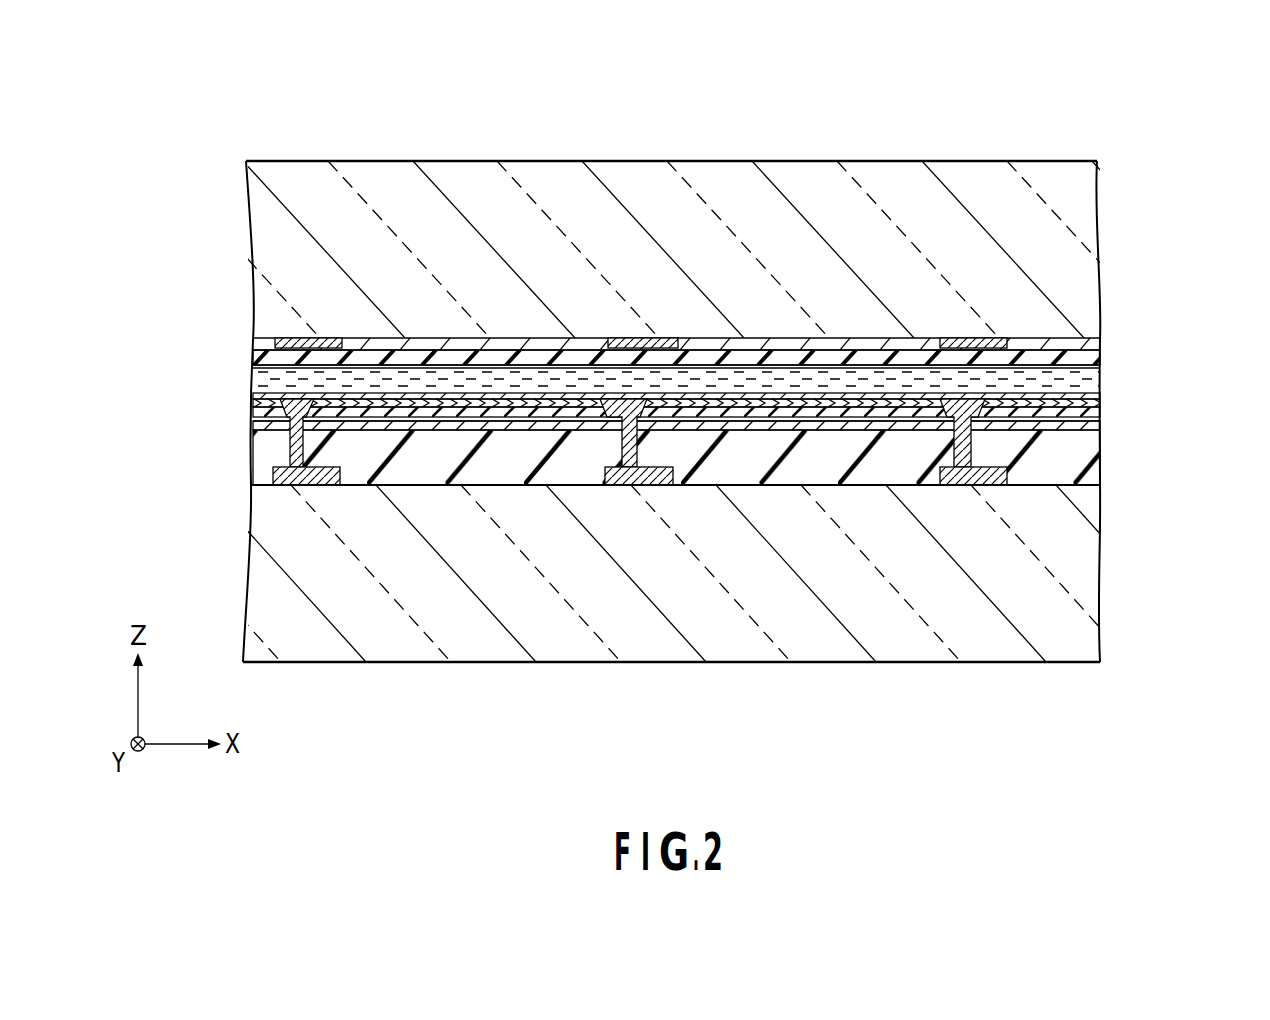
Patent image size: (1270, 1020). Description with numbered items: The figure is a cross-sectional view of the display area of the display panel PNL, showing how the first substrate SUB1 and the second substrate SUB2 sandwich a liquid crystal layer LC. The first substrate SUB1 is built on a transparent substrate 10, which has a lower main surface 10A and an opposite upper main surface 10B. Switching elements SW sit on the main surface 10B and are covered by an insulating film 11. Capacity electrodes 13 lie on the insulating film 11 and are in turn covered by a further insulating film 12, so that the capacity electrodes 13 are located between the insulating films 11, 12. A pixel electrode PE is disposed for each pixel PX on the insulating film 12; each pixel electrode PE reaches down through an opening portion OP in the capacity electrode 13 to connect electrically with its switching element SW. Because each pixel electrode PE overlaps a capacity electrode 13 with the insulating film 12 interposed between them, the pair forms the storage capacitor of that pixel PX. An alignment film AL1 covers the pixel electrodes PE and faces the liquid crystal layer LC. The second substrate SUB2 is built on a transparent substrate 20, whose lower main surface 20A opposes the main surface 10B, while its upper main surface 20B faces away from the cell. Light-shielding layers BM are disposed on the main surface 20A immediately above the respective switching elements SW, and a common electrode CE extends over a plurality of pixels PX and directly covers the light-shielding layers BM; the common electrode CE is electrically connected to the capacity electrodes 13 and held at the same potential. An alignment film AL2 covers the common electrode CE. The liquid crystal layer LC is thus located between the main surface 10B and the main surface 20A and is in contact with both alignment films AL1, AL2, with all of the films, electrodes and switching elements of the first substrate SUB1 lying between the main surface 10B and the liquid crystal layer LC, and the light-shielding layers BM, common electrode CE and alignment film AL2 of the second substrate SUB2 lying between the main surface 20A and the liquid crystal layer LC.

The display panel PNL is at (1083, 161).
The transparent substrate 20 is at (706, 215).
The main surface 20A is at (850, 346).
The main surface 20B is at (892, 161).
The second substrate SUB2 is at (1112, 270).
The light-shielding layer BM is at (308, 338).
The common electrode CE is at (1100, 344).
The alignment film AL2 is at (1100, 362).
The liquid crystal layer LC is at (1100, 385).
The alignment film AL1 is at (250, 380).
The pixel electrode PE is at (472, 400).
The insulating film 12 is at (250, 400).
The capacity electrode 13 is at (250, 418).
The opening portion OP is at (285, 440).
The insulating film 11 is at (262, 470).
The switching element SW is at (272, 485).
The transparent substrate 10 is at (674, 607).
The main surface 10A is at (883, 662).
The main surface 10B is at (801, 476).
The first substrate SUB1 is at (1112, 548).
The pixel PX is at (474, 460).